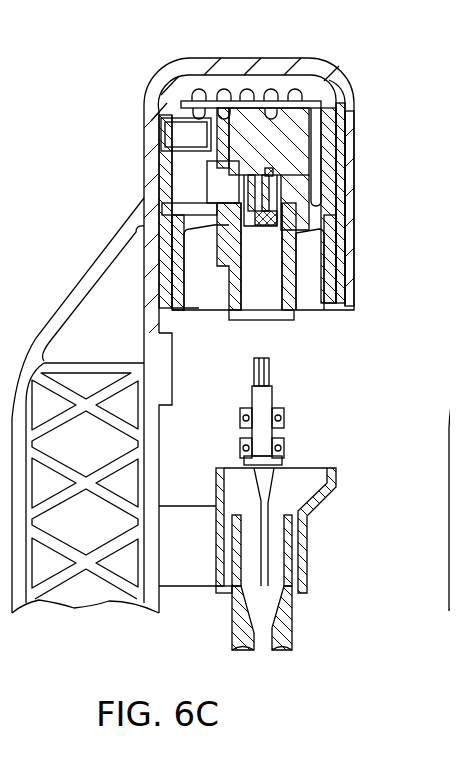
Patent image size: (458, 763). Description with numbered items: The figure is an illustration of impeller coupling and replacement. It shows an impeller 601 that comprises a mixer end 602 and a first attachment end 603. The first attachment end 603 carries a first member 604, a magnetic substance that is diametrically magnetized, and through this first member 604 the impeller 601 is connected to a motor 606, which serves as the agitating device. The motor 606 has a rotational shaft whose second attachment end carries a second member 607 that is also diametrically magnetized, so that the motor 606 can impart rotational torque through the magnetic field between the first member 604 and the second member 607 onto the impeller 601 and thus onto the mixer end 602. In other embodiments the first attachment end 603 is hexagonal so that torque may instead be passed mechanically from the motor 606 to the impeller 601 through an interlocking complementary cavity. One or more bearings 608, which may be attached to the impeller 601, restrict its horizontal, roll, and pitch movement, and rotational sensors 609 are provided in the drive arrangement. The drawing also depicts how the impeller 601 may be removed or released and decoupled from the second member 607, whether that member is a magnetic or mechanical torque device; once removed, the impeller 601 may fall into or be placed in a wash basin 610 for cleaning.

The impeller 601 is at (265, 538).
The mixer end 602 is at (253, 586).
The first attachment end 603 is at (255, 375).
The first member 604 is at (262, 194).
The motor 606 is at (270, 135).
The second member 607 is at (270, 172).
The bearings 608 is at (279, 445).
The rotational sensors 609 is at (243, 238).
The wash basin 610 is at (333, 485).